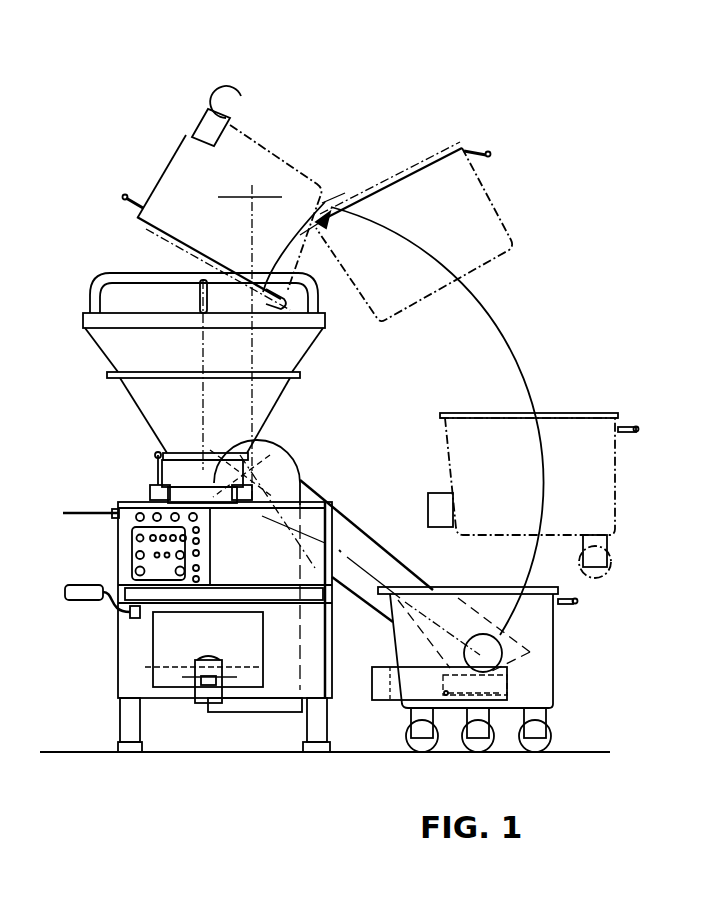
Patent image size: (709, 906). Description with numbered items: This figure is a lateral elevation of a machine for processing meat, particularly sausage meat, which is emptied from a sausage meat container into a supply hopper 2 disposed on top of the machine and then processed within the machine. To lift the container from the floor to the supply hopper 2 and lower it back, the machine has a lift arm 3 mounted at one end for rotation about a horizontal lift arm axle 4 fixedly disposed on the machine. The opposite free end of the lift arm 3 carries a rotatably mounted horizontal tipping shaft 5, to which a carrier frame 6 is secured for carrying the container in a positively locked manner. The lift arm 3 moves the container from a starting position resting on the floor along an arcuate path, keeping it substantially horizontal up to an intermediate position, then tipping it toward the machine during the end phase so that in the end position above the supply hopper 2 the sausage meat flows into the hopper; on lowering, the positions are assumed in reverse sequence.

The supply hopper 2 is at (143, 347).
The lift arm 3 is at (347, 542).
The lift arm axle 4 is at (262, 483).
The tipping shaft 5 is at (497, 652).
The carrier frame 6 is at (425, 680).